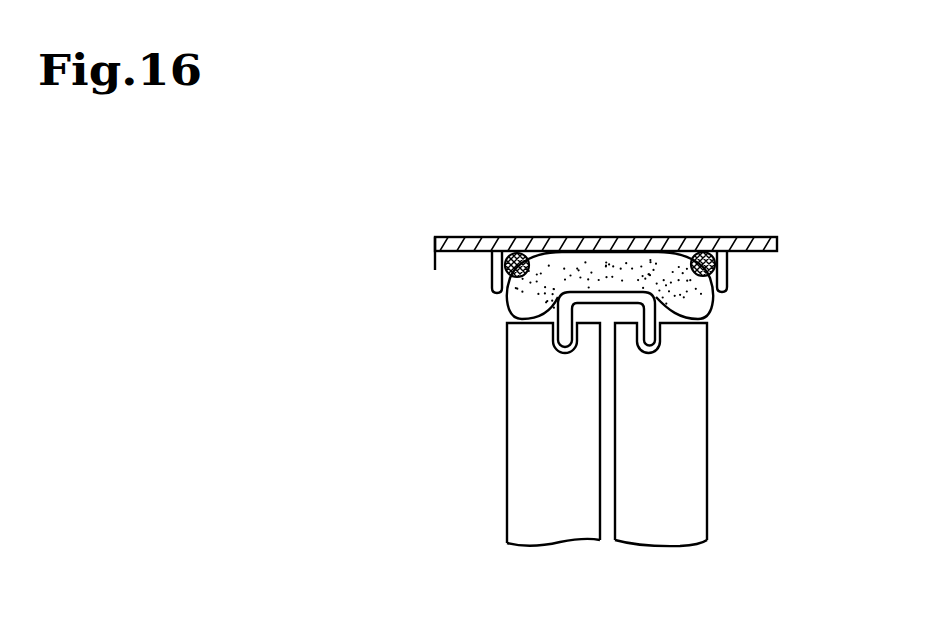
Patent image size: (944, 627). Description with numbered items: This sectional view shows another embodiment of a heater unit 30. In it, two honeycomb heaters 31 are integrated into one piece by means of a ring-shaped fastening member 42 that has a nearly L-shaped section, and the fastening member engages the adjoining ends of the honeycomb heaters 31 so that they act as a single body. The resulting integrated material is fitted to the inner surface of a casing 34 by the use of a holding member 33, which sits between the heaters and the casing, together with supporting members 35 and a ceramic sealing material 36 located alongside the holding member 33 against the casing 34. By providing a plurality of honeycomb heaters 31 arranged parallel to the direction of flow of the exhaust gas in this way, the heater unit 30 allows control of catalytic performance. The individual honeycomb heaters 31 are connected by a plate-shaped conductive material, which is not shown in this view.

The heater unit 30 is at (680, 210).
The honeycomb heater 31 is at (557, 423).
The holding member 33 is at (690, 303).
The casing 34 is at (478, 237).
The supporting member 35 is at (727, 280).
The ceramic sealing material 36 is at (723, 257).
The ring-shaped fastening member 42 is at (660, 337).